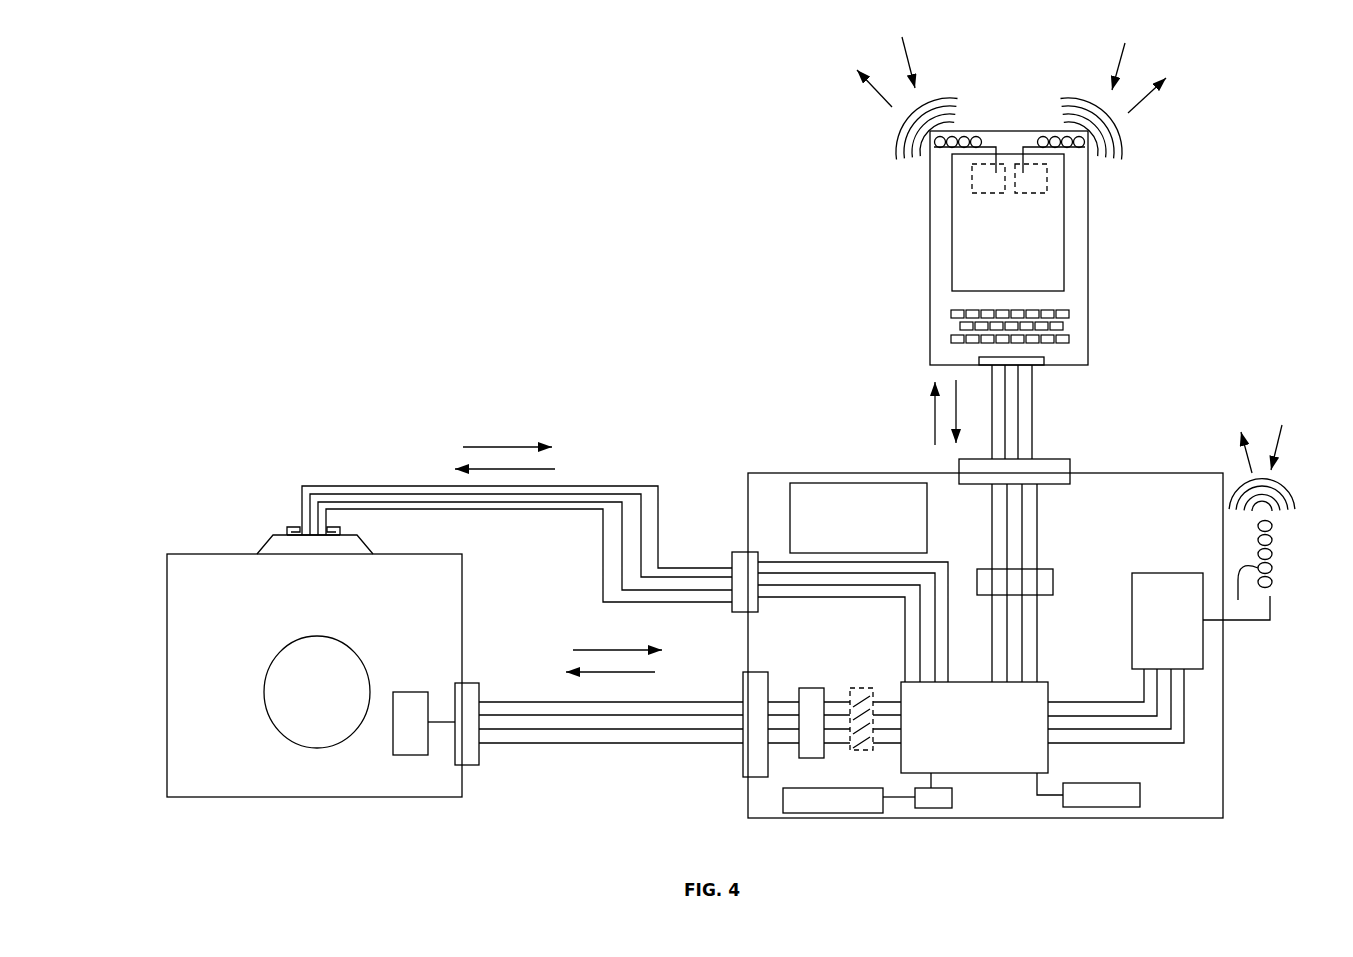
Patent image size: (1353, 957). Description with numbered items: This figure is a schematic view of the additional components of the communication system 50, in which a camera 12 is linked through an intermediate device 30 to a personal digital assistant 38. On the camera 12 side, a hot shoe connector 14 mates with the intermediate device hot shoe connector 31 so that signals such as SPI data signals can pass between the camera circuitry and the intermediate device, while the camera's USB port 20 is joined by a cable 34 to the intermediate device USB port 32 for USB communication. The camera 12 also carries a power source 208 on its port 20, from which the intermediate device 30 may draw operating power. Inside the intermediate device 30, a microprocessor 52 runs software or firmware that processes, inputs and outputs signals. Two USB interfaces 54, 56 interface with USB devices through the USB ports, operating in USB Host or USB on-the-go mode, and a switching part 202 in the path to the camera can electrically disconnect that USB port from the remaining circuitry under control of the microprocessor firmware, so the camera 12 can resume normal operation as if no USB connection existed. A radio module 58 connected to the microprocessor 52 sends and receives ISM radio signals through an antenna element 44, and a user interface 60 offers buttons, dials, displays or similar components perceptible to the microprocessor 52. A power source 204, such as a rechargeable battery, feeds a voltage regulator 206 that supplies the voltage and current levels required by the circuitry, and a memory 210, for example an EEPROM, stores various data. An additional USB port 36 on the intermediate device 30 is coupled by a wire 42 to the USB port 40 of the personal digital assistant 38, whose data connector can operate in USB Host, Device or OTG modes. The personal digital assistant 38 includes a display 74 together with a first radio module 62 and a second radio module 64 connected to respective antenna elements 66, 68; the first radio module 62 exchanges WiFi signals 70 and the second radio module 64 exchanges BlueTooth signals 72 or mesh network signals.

The communication system 50 is at (543, 159).
The camera 12 is at (314, 666).
The hot shoe connector 14 is at (285, 528).
The USB port 20 is at (479, 686).
The intermediate device 30 is at (965, 818).
The intermediate device hot shoe connector 31 is at (742, 552).
The intermediate device USB port 32 is at (743, 760).
The cable 34 is at (550, 745).
The additional USB port 36 is at (1067, 459).
The personal digital assistant 38 is at (1088, 285).
The USB port 40 is at (1032, 360).
The wire 42 is at (1032, 430).
The antenna element 44 is at (1249, 522).
The microprocessor 52 is at (982, 738).
The USB interface 54 is at (1015, 583).
The USB interface 56 is at (812, 688).
The radio module 58 is at (1125, 658).
The user interface 60 is at (858, 518).
The first radio module 62 is at (972, 180).
The second radio module 64 is at (1047, 178).
The antenna element 66 is at (976, 143).
The antenna element 68 is at (1038, 143).
The WiFi signals 70 is at (897, 150).
The BlueTooth signals 72 is at (1120, 150).
The display 74 is at (1065, 237).
The switching part 202 is at (853, 688).
The power source 204 is at (849, 800).
The voltage regulator 206 is at (933, 798).
The power source 208 is at (424, 723).
The memory 210 is at (1101, 795).